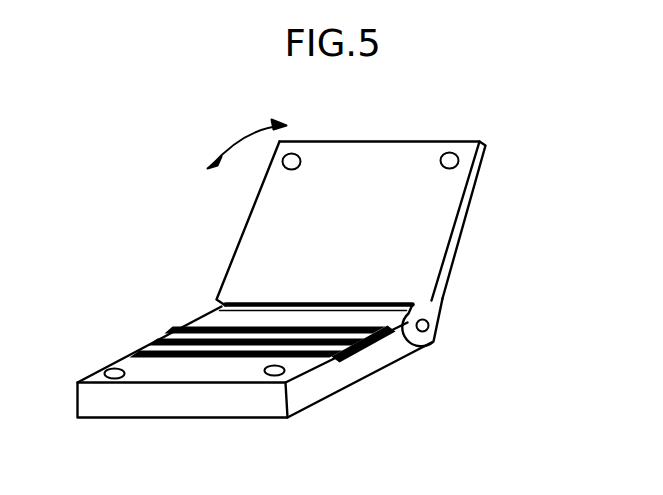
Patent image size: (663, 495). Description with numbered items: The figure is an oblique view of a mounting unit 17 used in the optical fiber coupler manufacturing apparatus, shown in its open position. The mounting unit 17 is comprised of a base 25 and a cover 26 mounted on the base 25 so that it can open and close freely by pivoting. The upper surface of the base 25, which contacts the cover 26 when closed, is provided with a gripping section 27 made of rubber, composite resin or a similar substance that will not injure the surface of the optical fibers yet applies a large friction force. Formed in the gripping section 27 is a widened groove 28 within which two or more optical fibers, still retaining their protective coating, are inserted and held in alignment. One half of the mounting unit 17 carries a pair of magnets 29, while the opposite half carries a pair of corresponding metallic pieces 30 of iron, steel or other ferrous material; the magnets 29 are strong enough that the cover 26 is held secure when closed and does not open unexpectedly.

The mounting unit 17 is at (305, 275).
The base 25 is at (233, 379).
The cover 26 is at (373, 199).
The gripping section 27 is at (400, 347).
The widened groove 28 is at (170, 337).
The magnets 29 is at (295, 154).
The metallic pieces 30 is at (108, 369).